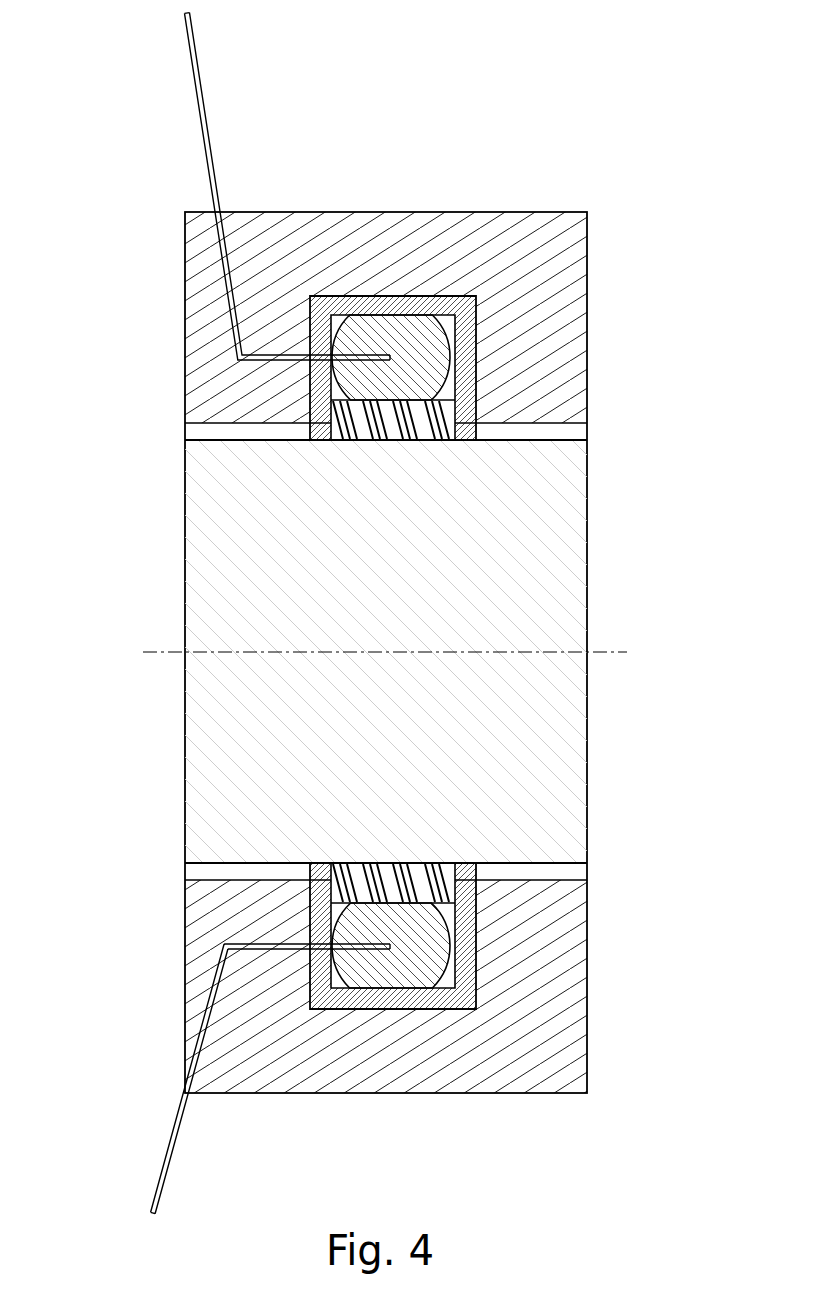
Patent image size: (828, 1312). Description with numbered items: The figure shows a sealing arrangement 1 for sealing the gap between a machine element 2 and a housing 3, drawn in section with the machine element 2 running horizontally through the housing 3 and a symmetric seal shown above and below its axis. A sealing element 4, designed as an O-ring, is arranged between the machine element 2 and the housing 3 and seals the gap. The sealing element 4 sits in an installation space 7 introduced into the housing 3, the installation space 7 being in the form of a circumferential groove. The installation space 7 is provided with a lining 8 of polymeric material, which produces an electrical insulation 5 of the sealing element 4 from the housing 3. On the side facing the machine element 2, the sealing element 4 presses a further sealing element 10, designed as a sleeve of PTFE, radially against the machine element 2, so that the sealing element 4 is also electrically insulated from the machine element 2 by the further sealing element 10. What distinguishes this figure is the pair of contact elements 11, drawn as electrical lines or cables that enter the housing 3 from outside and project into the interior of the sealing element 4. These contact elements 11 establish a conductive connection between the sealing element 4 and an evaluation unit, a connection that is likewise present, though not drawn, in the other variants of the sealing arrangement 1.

The sealing arrangement 1 is at (370, 613).
The machine element 2 is at (429, 651).
The housing 3 is at (429, 652).
The sealing element 4 is at (401, 556).
The electrical insulation 5 is at (288, 651).
The installation space 7 is at (491, 652).
The lining 8 is at (393, 567).
The further sealing element 10 is at (281, 651).
The contact elements 11 is at (192, 58).